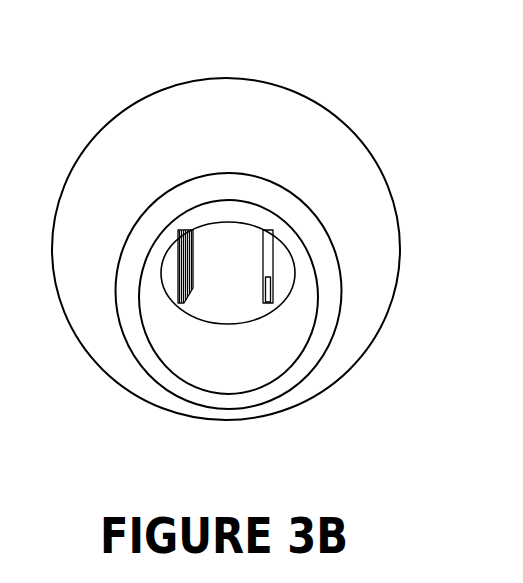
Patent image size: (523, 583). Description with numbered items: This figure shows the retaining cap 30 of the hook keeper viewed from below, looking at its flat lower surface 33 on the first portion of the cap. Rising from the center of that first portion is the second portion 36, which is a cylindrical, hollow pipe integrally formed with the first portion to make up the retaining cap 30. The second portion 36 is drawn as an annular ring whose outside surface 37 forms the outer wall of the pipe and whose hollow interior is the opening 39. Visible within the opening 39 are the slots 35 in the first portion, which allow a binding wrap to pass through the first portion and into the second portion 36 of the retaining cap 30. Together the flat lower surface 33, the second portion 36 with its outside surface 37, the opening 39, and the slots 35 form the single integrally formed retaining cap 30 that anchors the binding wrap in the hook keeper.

The retaining cap 30 is at (117, 62).
The flat lower surface 33 is at (88, 310).
The slots 35 is at (263, 303).
The second portion 36 is at (224, 188).
The outside surface 37 is at (238, 188).
The opening 39 is at (174, 360).